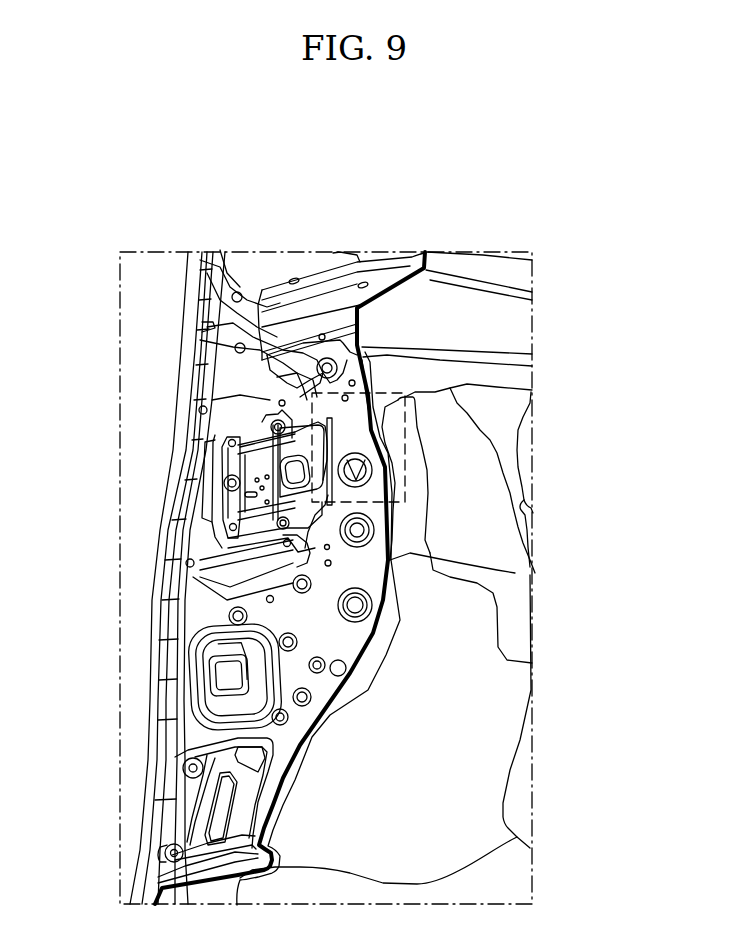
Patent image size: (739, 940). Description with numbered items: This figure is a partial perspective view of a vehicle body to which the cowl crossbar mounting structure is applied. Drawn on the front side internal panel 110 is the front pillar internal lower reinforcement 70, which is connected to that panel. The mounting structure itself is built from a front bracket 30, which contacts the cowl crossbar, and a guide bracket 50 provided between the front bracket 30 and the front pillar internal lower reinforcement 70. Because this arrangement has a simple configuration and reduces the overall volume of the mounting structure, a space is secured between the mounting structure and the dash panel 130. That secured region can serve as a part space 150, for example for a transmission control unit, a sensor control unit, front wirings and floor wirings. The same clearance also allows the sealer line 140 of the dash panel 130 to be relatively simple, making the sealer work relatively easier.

The front bracket 30 is at (191, 509).
The guide bracket 50 is at (243, 342).
The front pillar internal lower reinforcement 70 is at (266, 320).
The front side internal panel 110 is at (164, 654).
The dash panel 130 is at (416, 729).
The sealer line 140 is at (491, 604).
The part space 150 is at (453, 412).